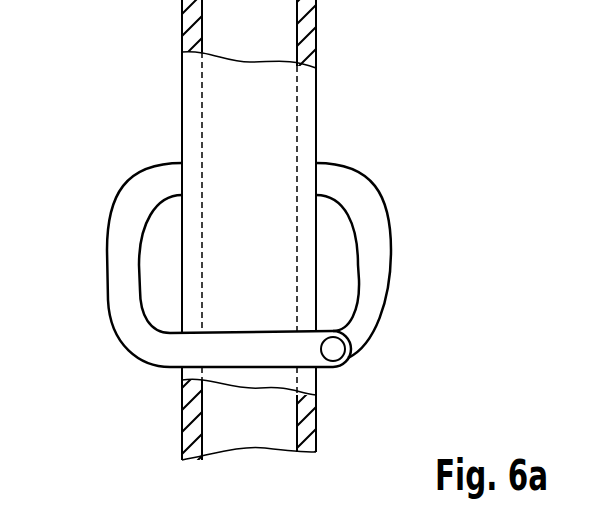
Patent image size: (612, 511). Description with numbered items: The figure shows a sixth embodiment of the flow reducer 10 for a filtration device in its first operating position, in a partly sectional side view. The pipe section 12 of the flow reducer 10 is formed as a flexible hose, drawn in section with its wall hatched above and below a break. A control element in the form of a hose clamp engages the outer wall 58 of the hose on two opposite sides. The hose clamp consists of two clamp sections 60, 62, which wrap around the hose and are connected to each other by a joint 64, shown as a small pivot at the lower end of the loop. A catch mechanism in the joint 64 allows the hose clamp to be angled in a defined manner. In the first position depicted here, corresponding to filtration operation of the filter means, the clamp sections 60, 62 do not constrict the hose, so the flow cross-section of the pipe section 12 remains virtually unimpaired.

The flow reducer 10 is at (437, 122).
The pipe section 12 is at (277, 103).
The outer wall 58 is at (192, 129).
The clamp section 60 is at (372, 300).
The clamp section 62 is at (126, 298).
The joint 64 is at (333, 349).